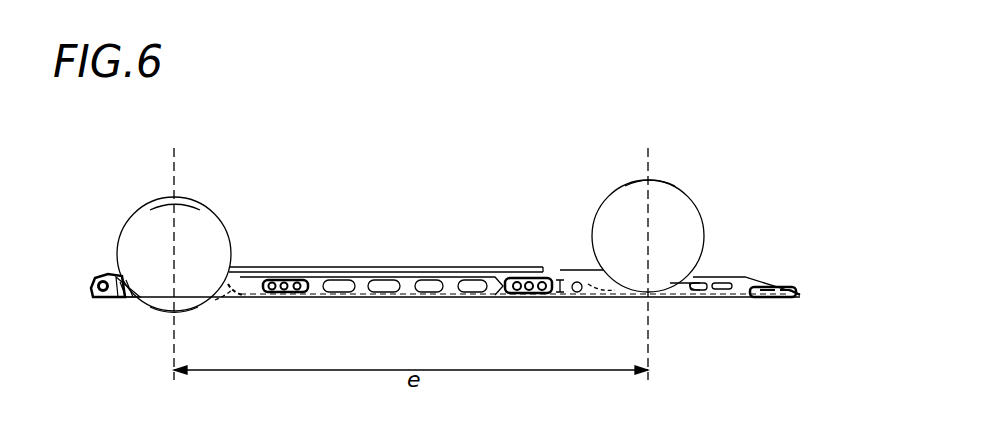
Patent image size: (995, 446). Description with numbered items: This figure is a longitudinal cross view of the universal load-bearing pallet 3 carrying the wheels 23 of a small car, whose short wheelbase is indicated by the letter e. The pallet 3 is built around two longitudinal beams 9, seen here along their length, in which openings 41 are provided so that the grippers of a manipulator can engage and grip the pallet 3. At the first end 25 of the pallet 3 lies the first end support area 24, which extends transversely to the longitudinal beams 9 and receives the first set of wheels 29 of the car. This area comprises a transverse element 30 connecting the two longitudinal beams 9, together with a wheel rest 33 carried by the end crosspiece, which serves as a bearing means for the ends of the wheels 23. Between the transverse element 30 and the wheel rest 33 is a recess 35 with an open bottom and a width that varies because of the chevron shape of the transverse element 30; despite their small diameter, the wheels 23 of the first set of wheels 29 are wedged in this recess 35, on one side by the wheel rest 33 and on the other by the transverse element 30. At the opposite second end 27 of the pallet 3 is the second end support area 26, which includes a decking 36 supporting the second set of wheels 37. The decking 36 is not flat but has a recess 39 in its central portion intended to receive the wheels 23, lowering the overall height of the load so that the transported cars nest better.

The load-bearing pallet 3 is at (507, 201).
The longitudinal beams 9 is at (407, 277).
The wheels 23 is at (152, 212).
The first end support area 24 is at (193, 317).
The first end 25 is at (92, 287).
The second end support area 26 is at (679, 329).
The second end 27 is at (807, 297).
The first set of wheels 29 is at (214, 200).
The transverse element 30 is at (233, 291).
The wheel rest 33 is at (118, 293).
The recess 35 is at (153, 313).
The decking 36 is at (722, 293).
The second set of wheels 37 is at (700, 188).
The recess 39 is at (610, 298).
The openings 41 is at (340, 295).